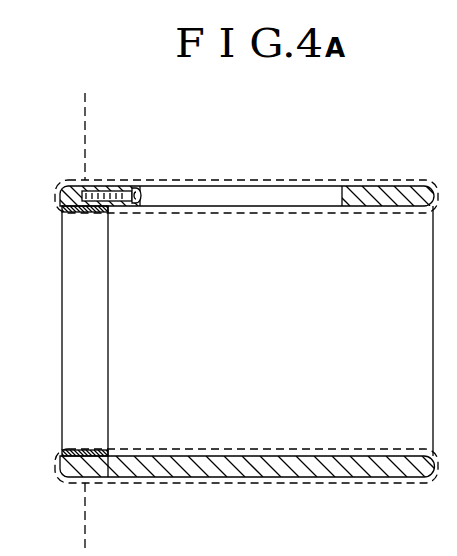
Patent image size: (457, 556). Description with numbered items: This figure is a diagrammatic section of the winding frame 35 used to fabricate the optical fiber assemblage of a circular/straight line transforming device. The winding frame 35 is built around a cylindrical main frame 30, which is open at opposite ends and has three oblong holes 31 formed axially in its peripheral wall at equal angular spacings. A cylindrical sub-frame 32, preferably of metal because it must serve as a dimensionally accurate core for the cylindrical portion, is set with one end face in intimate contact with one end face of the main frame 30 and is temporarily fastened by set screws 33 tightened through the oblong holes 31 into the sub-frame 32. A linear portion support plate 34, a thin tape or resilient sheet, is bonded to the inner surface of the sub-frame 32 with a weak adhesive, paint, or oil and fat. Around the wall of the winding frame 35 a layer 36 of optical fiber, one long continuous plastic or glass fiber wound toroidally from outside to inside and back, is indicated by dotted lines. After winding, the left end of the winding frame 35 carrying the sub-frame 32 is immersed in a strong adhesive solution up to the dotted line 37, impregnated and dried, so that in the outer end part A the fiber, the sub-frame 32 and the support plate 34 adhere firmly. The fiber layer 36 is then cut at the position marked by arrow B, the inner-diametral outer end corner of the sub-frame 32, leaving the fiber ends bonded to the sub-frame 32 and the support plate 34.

The cylindrical main frame 30 is at (210, 466).
The oblong holes 31 is at (239, 206).
The cylindrical sub-frame 32 is at (72, 178).
The set screws 33 is at (126, 190).
The linear portion support plate 34 is at (80, 212).
The winding frame 35 is at (276, 333).
The layer of optical fiber 36 is at (242, 180).
The dotted line 37 is at (88, 112).
The outer end part A is at (62, 190).
The arrow B is at (55, 218).